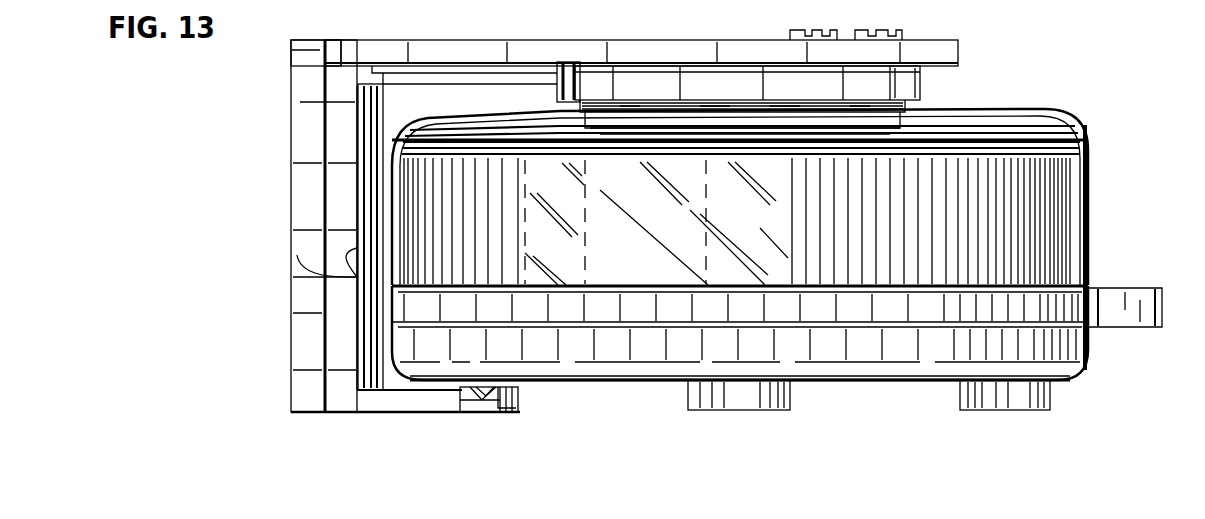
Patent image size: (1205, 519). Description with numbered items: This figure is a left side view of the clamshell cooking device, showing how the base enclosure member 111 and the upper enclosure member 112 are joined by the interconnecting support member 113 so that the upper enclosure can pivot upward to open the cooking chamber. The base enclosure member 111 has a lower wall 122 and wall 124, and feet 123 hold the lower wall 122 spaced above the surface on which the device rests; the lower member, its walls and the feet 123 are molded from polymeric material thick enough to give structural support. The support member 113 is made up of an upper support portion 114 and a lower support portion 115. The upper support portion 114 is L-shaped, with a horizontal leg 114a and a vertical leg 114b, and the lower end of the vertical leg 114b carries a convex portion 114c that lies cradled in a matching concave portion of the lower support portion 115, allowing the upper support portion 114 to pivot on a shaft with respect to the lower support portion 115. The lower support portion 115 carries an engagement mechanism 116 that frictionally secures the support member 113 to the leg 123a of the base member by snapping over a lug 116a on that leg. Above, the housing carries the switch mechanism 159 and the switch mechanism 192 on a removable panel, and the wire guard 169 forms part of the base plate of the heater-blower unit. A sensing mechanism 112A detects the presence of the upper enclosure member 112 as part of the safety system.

The base enclosure member 111 is at (1066, 366).
The upper enclosure member 112 is at (1088, 195).
The sensing mechanism 112A is at (381, 222).
The interconnecting member 113 is at (685, 52).
The upper support portion 114 is at (592, 56).
The horizontal leg 114a is at (457, 50).
The vertical leg 114b is at (324, 46).
The convex portion 114c is at (312, 258).
The lower support portion 115 is at (306, 292).
The engagement mechanism 116 is at (508, 401).
The lug 116a is at (485, 388).
The lower wall 122 is at (646, 387).
The feet 123 is at (790, 400).
The leg 123a is at (506, 388).
The wall 124 is at (1088, 286).
The switch mechanism 159 is at (806, 30).
The wire guard 169 is at (902, 158).
The switch mechanism 192 is at (868, 30).